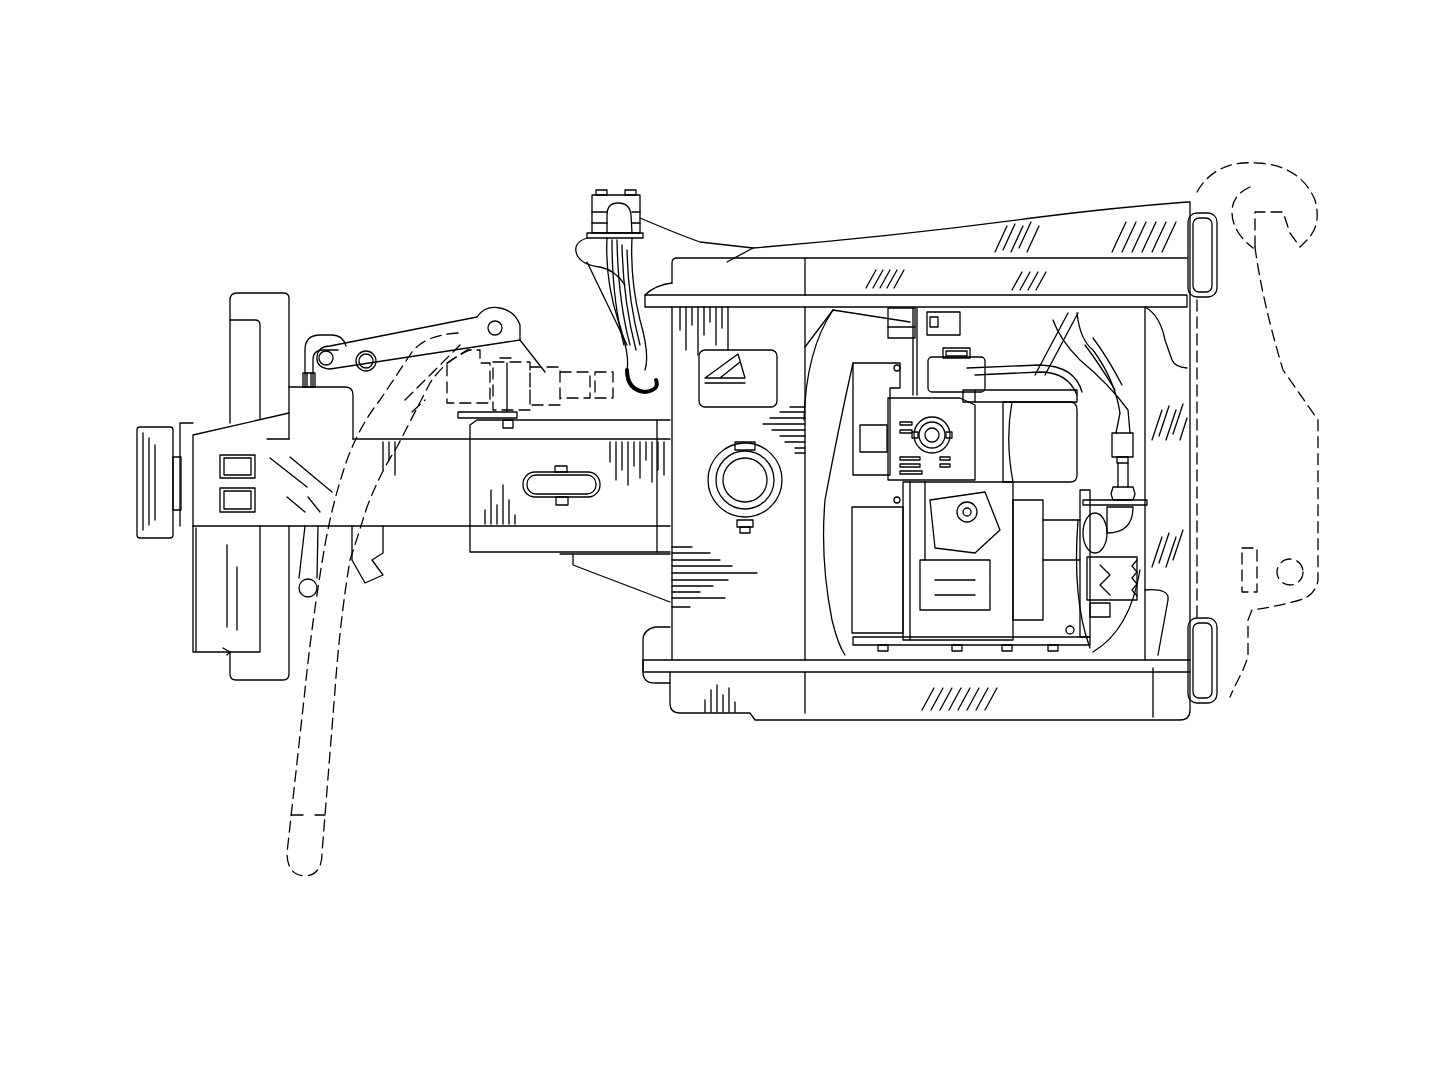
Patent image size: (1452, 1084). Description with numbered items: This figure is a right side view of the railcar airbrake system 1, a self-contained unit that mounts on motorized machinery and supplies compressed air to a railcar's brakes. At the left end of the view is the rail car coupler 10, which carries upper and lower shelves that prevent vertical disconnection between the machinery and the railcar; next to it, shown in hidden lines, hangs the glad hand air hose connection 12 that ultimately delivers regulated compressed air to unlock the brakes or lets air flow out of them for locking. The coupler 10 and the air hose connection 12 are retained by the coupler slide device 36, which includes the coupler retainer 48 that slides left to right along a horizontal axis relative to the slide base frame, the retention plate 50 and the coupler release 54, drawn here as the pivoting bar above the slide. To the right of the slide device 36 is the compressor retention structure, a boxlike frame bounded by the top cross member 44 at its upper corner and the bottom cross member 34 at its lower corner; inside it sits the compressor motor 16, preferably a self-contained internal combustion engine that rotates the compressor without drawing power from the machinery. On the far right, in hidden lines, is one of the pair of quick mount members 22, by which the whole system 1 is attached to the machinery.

The railcar airbrake system 1 is at (1041, 152).
The rail car coupler 10 is at (194, 565).
The glad hand air hose connection 12 is at (337, 688).
The compressor motor 16 is at (873, 620).
The quick mount member 22 is at (1287, 343).
The bottom cross member 34 is at (1217, 656).
The coupler slide device 36 is at (651, 611).
The top cross member 44 is at (1203, 213).
The coupler retainer 48 is at (463, 560).
The retention plate 50 is at (543, 487).
The coupler release 54 is at (407, 327).